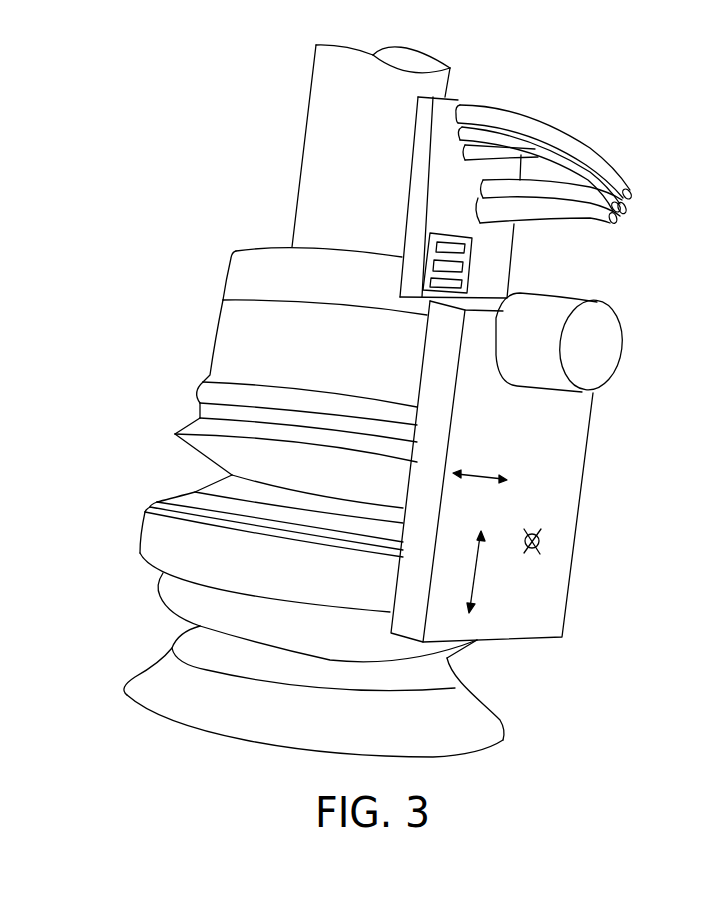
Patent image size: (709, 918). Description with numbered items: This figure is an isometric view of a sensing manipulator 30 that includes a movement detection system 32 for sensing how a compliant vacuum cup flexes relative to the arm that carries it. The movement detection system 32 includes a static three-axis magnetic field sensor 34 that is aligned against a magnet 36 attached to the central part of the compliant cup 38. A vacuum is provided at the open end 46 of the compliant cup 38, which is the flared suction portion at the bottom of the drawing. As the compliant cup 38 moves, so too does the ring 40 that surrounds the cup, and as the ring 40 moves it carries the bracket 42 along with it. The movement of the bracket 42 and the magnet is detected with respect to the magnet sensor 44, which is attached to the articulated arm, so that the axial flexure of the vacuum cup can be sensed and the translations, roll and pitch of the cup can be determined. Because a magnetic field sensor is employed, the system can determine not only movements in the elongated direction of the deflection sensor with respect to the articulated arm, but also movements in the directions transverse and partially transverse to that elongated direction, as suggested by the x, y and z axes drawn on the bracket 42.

The sensing manipulator 30 is at (141, 197).
The movement detection system 32 is at (647, 115).
The static 3-axis magnetic field sensor 34 is at (472, 258).
The magnet 36 is at (617, 346).
The compliant cup 38 is at (230, 355).
The ring 40 is at (160, 537).
The bracket 42 is at (558, 563).
The magnet sensor 44 is at (318, 132).
The open end 46 is at (155, 714).